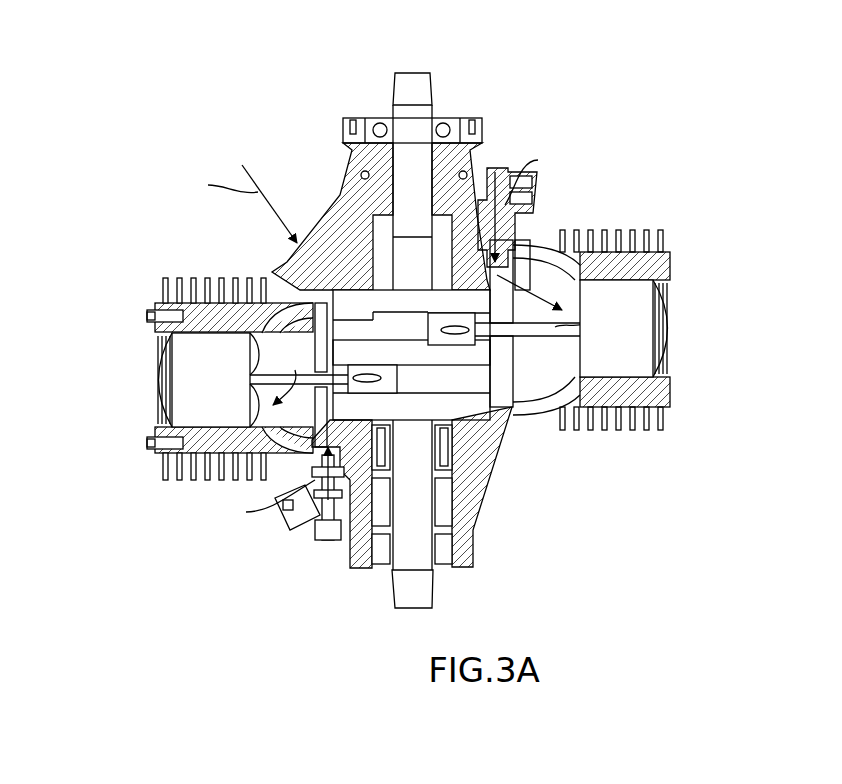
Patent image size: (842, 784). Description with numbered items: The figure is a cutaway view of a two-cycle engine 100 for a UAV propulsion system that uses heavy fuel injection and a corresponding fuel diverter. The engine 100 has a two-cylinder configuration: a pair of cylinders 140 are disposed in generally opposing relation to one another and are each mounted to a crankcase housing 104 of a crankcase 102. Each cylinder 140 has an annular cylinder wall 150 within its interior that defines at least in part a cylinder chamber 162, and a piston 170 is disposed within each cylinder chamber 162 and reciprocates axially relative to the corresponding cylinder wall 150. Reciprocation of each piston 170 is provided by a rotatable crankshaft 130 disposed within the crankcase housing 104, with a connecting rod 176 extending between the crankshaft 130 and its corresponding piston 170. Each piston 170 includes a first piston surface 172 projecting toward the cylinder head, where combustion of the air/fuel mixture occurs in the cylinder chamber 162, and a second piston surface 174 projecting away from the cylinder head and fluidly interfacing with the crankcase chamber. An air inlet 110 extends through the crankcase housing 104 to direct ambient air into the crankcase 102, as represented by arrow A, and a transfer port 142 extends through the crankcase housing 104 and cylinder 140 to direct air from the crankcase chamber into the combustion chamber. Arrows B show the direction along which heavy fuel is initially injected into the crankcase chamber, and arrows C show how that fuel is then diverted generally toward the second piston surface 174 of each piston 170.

The engine 100 is at (612, 100).
The crankcase 102 is at (257, 123).
The crankcase housing 104 is at (473, 530).
The air inlet 110 is at (287, 262).
The crankshaft 130 is at (390, 593).
The cylinder 140 is at (137, 473).
The transfer port 142 is at (583, 247).
The cylinder wall 150 is at (560, 365).
The cylinder chamber 162 is at (273, 347).
The piston 170 is at (137, 383).
The first piston surface 172 is at (673, 360).
The second piston surface 174 is at (247, 330).
The connecting rod 176 is at (210, 415).